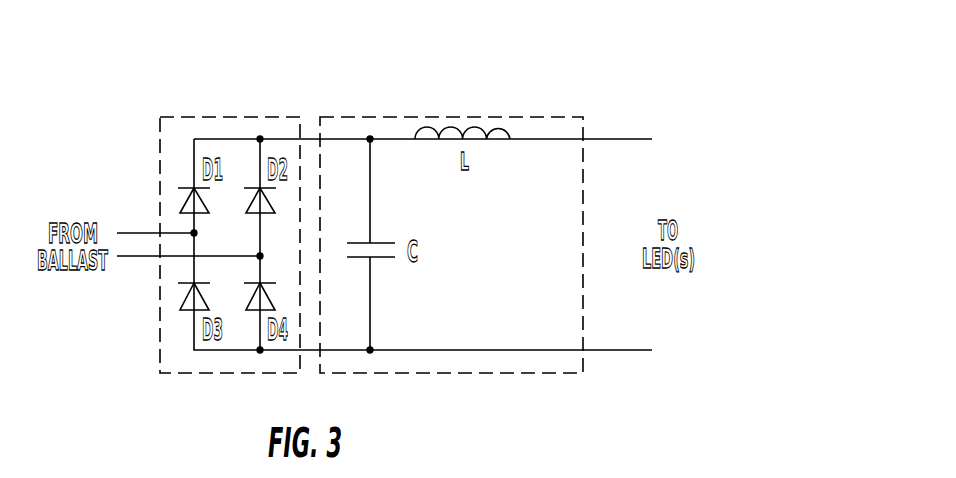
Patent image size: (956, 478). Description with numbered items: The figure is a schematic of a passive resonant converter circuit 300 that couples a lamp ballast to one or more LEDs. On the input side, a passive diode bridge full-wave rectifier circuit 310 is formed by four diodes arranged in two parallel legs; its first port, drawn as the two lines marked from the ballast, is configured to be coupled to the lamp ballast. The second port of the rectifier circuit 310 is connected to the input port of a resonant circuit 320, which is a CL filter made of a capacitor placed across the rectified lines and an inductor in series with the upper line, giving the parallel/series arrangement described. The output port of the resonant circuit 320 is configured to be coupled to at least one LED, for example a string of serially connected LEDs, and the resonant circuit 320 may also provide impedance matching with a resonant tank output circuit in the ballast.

The passive resonant converter circuit 300 is at (670, 67).
The passive diode bridge full-wave rectifier circuit 310 is at (217, 117).
The resonant circuit 320 is at (447, 117).